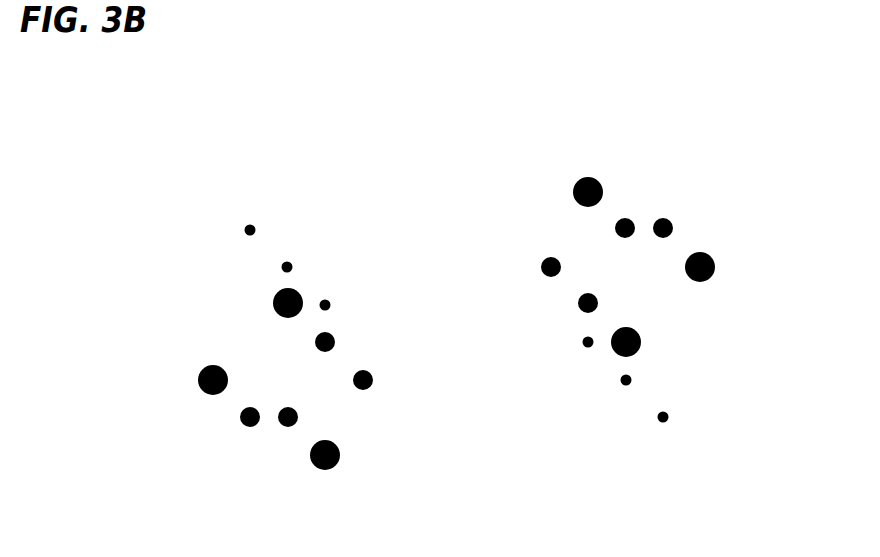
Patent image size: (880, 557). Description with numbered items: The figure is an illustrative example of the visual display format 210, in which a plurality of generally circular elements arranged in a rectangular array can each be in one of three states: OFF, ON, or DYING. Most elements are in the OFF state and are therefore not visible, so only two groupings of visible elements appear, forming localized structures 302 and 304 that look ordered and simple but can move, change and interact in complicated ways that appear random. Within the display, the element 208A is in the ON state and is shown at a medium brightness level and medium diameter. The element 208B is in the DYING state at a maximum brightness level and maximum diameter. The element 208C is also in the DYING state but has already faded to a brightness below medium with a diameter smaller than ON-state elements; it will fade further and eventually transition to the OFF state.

The visual display format 210 is at (645, 72).
The localized structure 302 is at (337, 207).
The localized structure 304 is at (528, 181).
The element 208A is at (251, 428).
The element 208B is at (212, 365).
The element 208C is at (249, 224).